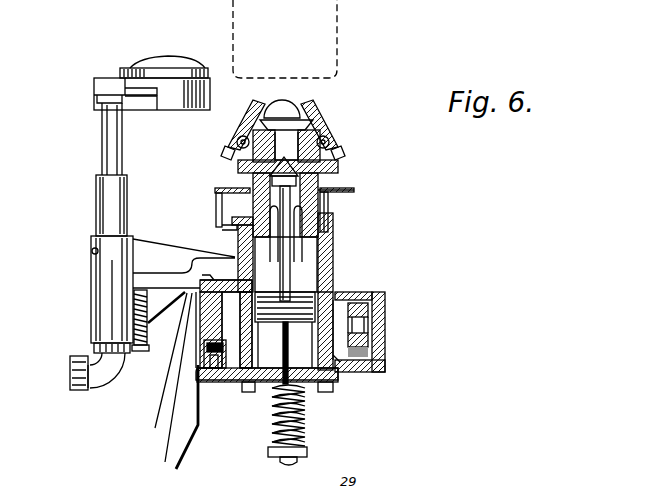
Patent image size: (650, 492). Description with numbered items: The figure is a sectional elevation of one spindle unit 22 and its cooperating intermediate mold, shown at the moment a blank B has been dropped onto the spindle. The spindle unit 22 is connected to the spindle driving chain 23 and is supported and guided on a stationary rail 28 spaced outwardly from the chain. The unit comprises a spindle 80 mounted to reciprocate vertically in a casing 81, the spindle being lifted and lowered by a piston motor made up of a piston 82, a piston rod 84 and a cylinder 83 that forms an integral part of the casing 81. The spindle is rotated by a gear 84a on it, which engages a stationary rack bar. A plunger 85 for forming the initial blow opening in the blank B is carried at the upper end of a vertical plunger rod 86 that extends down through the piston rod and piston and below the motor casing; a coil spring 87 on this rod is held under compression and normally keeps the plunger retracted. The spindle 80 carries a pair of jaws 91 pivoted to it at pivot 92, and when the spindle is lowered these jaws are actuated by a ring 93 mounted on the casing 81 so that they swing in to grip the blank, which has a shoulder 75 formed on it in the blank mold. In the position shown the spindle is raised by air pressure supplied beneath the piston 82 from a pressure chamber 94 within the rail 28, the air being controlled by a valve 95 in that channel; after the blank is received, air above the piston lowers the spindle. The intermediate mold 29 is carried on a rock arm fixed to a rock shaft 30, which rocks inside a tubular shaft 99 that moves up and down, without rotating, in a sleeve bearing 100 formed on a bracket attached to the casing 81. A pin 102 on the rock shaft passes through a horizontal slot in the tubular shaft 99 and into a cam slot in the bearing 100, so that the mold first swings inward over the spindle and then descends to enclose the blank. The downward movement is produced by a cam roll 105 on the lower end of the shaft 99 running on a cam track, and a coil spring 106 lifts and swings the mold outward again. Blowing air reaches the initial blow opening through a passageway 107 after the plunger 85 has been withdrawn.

The blank B is at (283, 100).
The spindle unit 22 is at (358, 232).
The spindle driving chain 23 is at (385, 333).
The rail 28 is at (200, 322).
The intermediate mold 29 is at (173, 62).
The rock shaft 30 is at (114, 145).
The shoulder 75 is at (306, 110).
The spindle 80 is at (330, 202).
The casing 81 is at (333, 275).
The piston 82 is at (318, 300).
The cylinder 83 is at (336, 360).
The piston rod 84 is at (290, 262).
The gear 84a is at (238, 163).
The plunger 85 is at (282, 182).
The plunger rod 86 is at (282, 375).
The coil spring 87 is at (305, 417).
The jaws 91 is at (326, 115).
The pivot 92 is at (332, 140).
The ring 93 is at (345, 190).
The pressure chamber 94 is at (204, 353).
The valve 95 is at (214, 370).
The tubular shaft 99 is at (98, 200).
The sleeve bearing 100 is at (93, 292).
The pin 102 is at (93, 250).
The cam roll 105 is at (76, 370).
The coil spring 106 is at (150, 300).
The passageway 107 is at (238, 205).